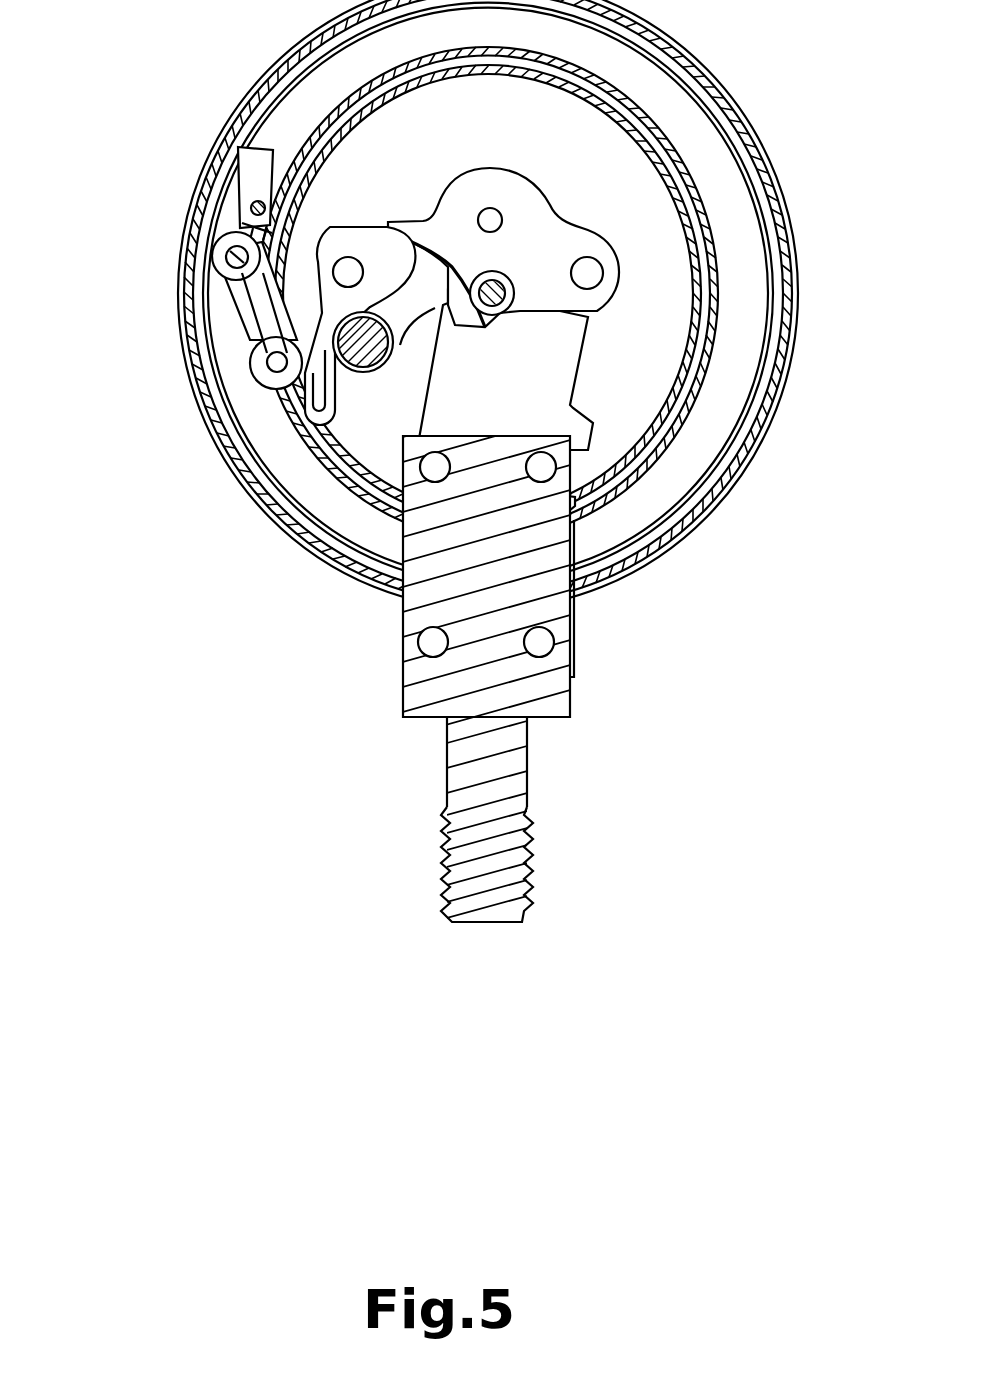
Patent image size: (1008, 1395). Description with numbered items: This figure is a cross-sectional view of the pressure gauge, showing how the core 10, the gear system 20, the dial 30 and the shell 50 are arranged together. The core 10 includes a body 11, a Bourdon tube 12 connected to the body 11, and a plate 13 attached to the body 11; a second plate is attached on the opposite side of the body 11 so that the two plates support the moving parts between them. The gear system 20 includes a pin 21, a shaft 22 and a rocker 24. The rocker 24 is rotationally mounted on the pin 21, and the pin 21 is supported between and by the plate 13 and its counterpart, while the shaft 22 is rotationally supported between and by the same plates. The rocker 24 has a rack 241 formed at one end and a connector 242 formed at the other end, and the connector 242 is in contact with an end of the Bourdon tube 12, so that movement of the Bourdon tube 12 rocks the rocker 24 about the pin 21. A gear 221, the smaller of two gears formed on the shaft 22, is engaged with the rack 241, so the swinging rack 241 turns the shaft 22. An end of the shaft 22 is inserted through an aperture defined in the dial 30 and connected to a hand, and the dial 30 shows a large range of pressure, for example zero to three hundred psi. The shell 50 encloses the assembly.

The core 10 is at (350, 872).
The body 11 is at (420, 688).
The Bourdon tube 12 is at (708, 372).
The plate 13 is at (520, 237).
The gear system 20 is at (194, 445).
The pin 21 is at (363, 342).
The shaft 22 is at (600, 312).
The gear 221 is at (513, 280).
The rocker 24 is at (308, 425).
The rack 241 is at (447, 275).
The connector 242 is at (250, 300).
The dial 30 is at (618, 197).
The shell 50 is at (655, 30).